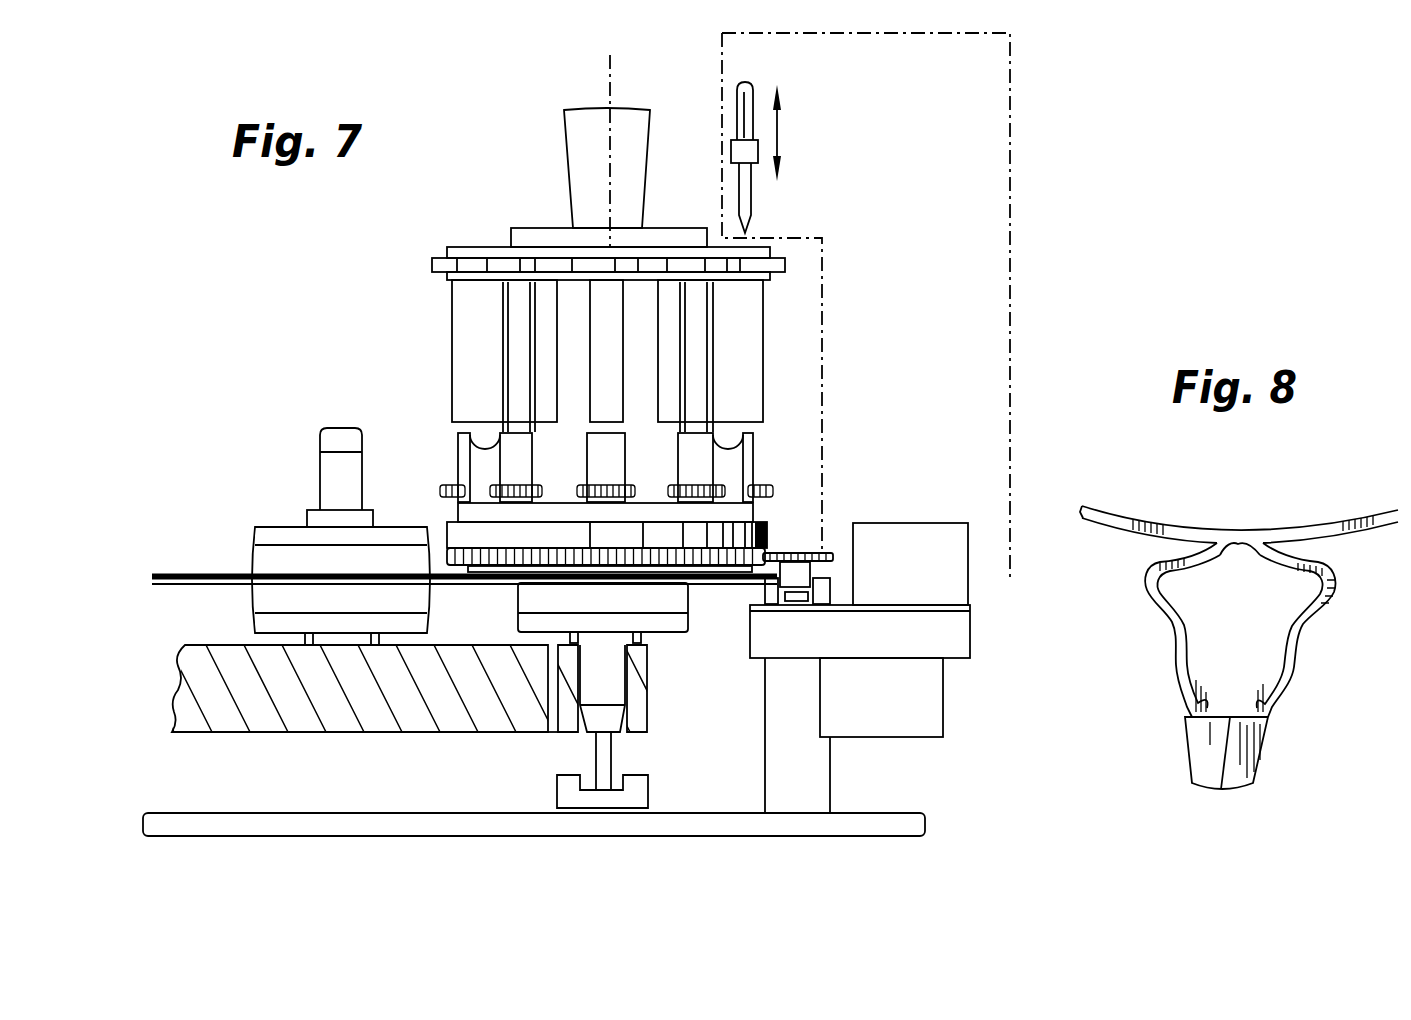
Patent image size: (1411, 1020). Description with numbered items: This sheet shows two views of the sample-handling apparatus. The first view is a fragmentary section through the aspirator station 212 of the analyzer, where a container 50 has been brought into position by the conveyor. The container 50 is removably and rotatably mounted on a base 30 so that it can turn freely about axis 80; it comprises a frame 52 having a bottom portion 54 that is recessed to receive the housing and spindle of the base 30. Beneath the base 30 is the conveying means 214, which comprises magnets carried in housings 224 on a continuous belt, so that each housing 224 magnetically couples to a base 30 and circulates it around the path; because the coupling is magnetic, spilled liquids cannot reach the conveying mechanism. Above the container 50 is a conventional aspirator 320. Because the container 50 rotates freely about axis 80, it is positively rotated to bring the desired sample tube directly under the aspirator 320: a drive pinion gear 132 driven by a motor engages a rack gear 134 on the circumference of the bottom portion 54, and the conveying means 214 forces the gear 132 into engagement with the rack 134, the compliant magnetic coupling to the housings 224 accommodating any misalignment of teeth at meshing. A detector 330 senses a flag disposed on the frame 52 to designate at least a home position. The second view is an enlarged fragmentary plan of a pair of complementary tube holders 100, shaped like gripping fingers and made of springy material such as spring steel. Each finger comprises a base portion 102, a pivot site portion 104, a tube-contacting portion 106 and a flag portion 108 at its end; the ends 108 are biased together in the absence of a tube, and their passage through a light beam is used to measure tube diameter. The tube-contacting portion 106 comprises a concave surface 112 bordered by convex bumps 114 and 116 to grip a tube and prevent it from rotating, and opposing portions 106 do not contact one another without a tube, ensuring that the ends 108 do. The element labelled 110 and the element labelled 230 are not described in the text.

In FIG. 7, the base 30 is at (256, 508).
In FIG. 7, the container 50 is at (477, 196).
In FIG. 7, the frame 52 is at (772, 348).
In FIG. 7, the bottom portion 54 is at (447, 538).
In FIG. 7, the axis 80 is at (606, 93).
In FIG. 7, the drive pinion gear 132 is at (833, 553).
In FIG. 7, the rack gear 134 is at (473, 562).
In FIG. 7, the aspirator station 212 is at (1010, 200).
In FIG. 7, the conveying means 214 is at (360, 765).
In FIG. 7, the housing 224 is at (660, 627).
In FIG. 7, the support plate 230 is at (705, 612).
In FIG. 7, the aspirator 320 is at (753, 94).
In FIG. 7, the detector 330 is at (930, 580).
In FIG. 8, the tube holder 100 is at (1147, 773).
In FIG. 8, the base portion 102 is at (1288, 518).
In FIG. 8, the pivot site portion 104 is at (1125, 575).
In FIG. 8, the tube-contacting portion 106 is at (1167, 703).
In FIG. 8, the flag portion 108 is at (1188, 768).
In FIG. 8, the band 110 is at (1337, 520).
In FIG. 8, the concave surface 112 is at (1278, 667).
In FIG. 8, the convex surface 114 is at (1183, 730).
In FIG. 8, the convex surface 116 is at (1280, 620).